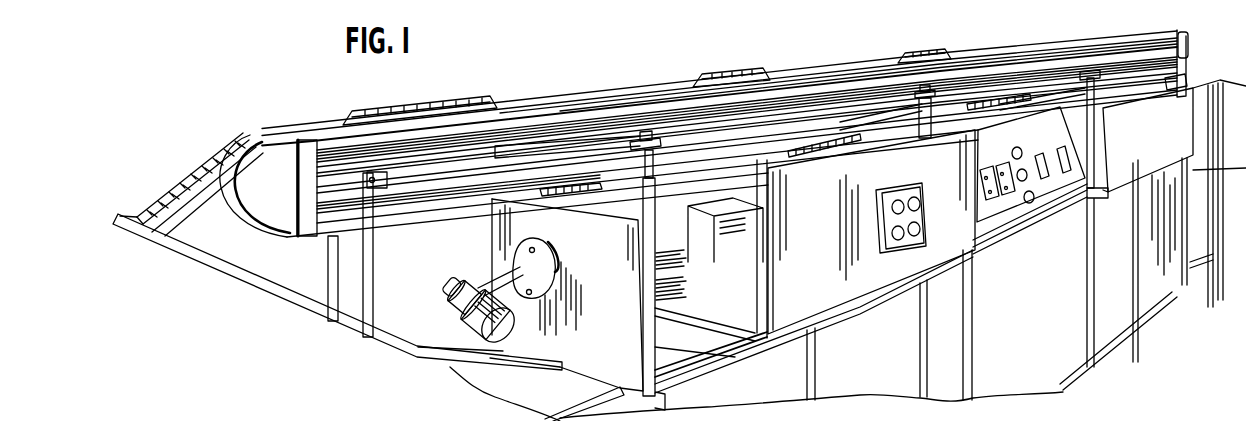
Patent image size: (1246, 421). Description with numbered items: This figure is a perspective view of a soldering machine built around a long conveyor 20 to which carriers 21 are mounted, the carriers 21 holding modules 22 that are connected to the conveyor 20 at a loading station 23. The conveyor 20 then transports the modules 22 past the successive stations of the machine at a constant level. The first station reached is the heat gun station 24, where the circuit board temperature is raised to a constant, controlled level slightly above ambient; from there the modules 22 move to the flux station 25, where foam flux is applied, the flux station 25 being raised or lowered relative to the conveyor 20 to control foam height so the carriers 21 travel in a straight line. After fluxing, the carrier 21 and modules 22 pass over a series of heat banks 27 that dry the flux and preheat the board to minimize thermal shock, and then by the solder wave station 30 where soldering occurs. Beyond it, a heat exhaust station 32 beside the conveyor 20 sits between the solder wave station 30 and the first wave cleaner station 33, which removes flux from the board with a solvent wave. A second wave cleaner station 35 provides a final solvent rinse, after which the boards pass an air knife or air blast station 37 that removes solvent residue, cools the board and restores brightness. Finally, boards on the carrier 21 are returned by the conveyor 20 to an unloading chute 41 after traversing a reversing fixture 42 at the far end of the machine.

The conveyor 20 is at (536, 104).
The carriers 21 is at (466, 110).
The modules 22 is at (409, 108).
The loading station 23 is at (422, 193).
The heat gun station 24 is at (578, 273).
The flux station 25 is at (693, 247).
The heat banks 27 is at (840, 143).
The solder wave station 30 is at (1020, 208).
The heat exhaust station 32 is at (1028, 96).
The first wave cleaner station 33 is at (1117, 158).
The second wave cleaner station 35 is at (1173, 127).
The air knife or air blast station 37 is at (1187, 82).
The unloading chute 41 is at (232, 278).
The reversing fixture 42 is at (1189, 45).